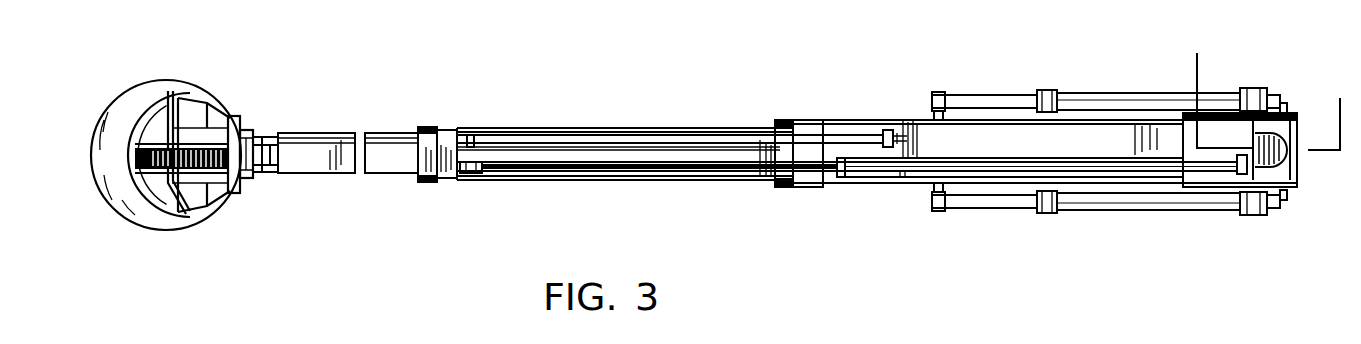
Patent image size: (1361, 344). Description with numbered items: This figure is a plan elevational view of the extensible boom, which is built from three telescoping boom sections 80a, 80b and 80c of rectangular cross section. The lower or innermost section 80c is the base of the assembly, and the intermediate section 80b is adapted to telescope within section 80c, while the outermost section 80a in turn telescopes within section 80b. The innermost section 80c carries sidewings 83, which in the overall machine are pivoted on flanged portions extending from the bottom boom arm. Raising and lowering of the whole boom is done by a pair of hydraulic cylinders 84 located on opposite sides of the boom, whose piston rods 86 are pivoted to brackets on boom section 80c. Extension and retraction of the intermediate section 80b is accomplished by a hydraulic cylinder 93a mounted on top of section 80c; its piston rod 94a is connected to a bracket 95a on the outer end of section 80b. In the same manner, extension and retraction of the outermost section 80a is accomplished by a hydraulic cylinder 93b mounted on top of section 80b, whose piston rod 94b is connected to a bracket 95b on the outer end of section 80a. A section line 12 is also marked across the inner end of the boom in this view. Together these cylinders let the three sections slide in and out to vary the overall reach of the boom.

The section line 12- 12 is at (1271, 81).
The boom section 80a is at (392, 160).
The boom section 80b is at (660, 153).
The boom section 80c is at (1093, 133).
The sidewings 83 is at (1230, 88).
The hydraulic cylinders 84 is at (1148, 96).
The piston rods 86 is at (990, 97).
The hydraulic cylinder 93a is at (897, 179).
The hydraulic cylinder 93b is at (550, 132).
The piston rod 94a is at (683, 175).
The piston rod 94b is at (393, 137).
The bracket 95a is at (472, 180).
The bracket 95b is at (290, 133).